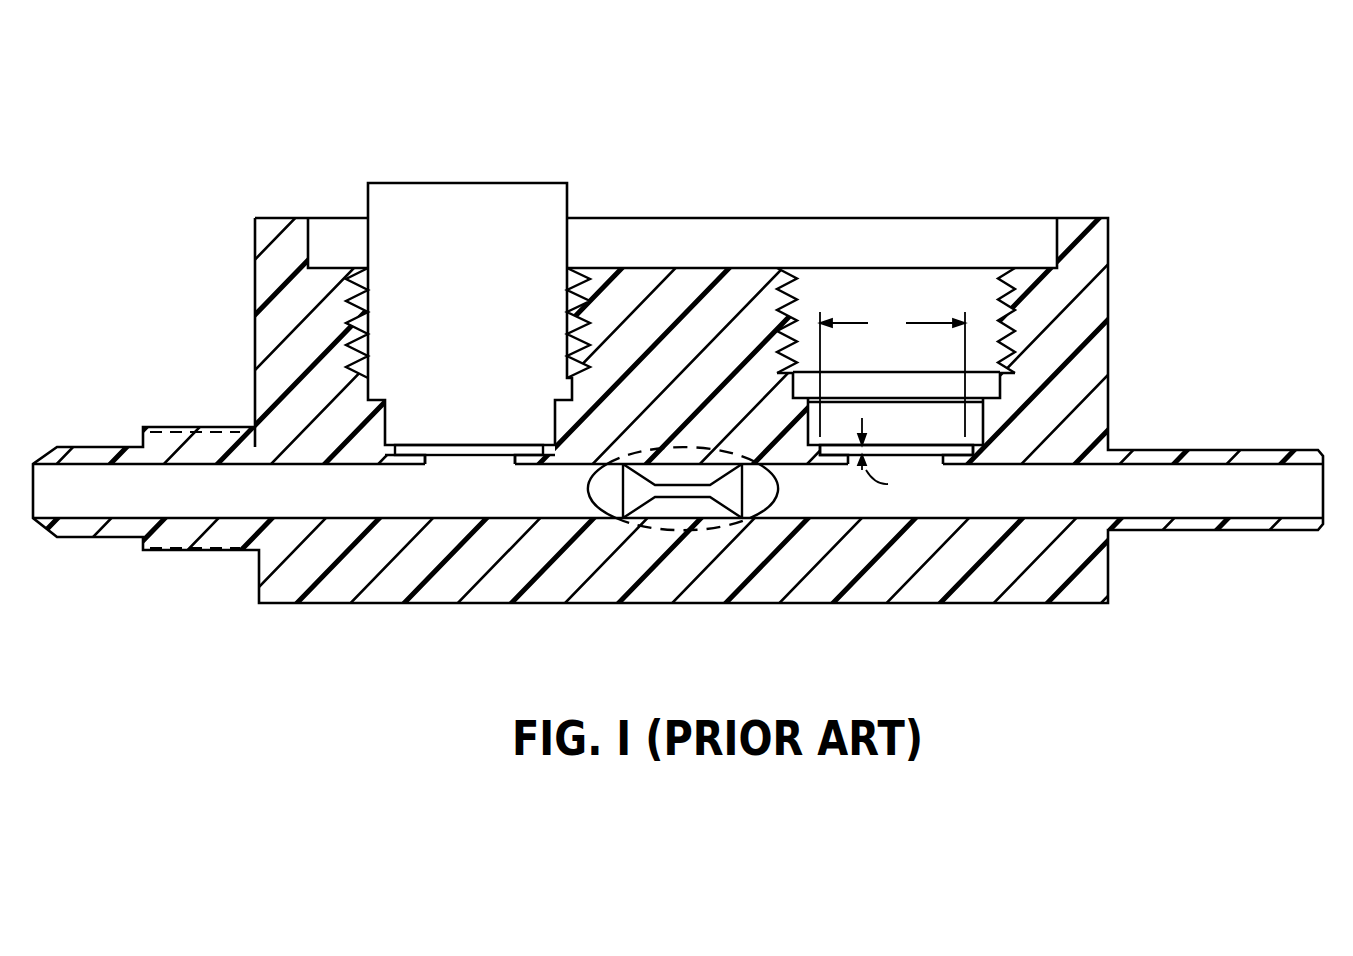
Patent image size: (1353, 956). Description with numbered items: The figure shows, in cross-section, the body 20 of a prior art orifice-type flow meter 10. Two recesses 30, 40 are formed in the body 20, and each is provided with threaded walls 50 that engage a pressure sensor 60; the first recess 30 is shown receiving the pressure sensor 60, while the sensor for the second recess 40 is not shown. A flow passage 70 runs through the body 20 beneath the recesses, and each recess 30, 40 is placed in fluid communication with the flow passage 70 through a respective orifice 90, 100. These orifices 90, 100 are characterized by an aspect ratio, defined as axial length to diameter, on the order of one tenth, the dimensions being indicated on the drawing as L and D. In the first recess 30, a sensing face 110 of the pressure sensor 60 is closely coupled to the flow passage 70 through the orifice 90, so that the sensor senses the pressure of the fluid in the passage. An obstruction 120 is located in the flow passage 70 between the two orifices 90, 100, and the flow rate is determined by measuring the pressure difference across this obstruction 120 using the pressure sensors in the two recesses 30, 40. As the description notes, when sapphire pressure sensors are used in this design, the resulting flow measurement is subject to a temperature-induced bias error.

The orifice-type flow meter 10 is at (676, 357).
The body 20 is at (241, 275).
The recess 30 is at (358, 251).
The recess 40 is at (993, 263).
The threaded walls 50 is at (763, 290).
The pressure sensor 60 is at (452, 309).
The flow passage 70 is at (150, 477).
The orifice 90 is at (418, 455).
The orifice 100 is at (917, 452).
The sensing face 110 is at (465, 455).
The obstruction 120 is at (653, 542).